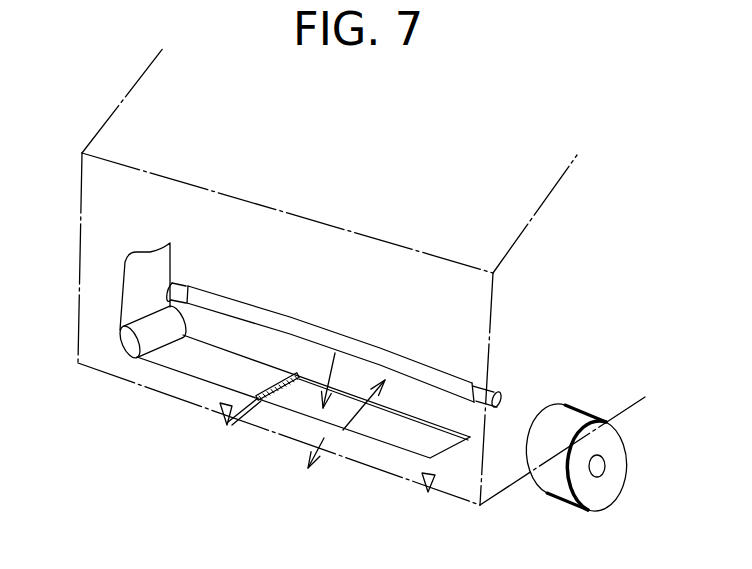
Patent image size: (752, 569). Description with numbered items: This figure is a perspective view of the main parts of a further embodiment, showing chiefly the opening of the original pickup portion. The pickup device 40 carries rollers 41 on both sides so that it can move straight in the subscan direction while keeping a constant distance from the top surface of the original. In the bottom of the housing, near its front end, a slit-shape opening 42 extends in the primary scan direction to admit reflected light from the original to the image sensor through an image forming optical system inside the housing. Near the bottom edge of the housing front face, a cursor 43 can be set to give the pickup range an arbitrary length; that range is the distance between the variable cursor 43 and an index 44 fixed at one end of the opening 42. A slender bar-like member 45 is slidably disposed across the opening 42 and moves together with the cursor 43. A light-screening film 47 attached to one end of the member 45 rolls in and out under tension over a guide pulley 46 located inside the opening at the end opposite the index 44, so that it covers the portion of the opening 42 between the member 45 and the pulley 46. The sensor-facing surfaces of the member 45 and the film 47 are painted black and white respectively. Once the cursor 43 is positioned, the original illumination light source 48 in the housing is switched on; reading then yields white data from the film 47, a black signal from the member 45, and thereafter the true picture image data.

The pickup device 40 is at (108, 89).
The rollers 41 is at (603, 490).
The slit-shape opening 42 is at (410, 430).
The cursor 43 is at (218, 412).
The index 44 is at (421, 484).
The bar-like member 45 is at (278, 377).
The guide pulley 46 is at (140, 328).
The light-screening film 47 is at (172, 362).
The original illumination light source 48 is at (403, 358).